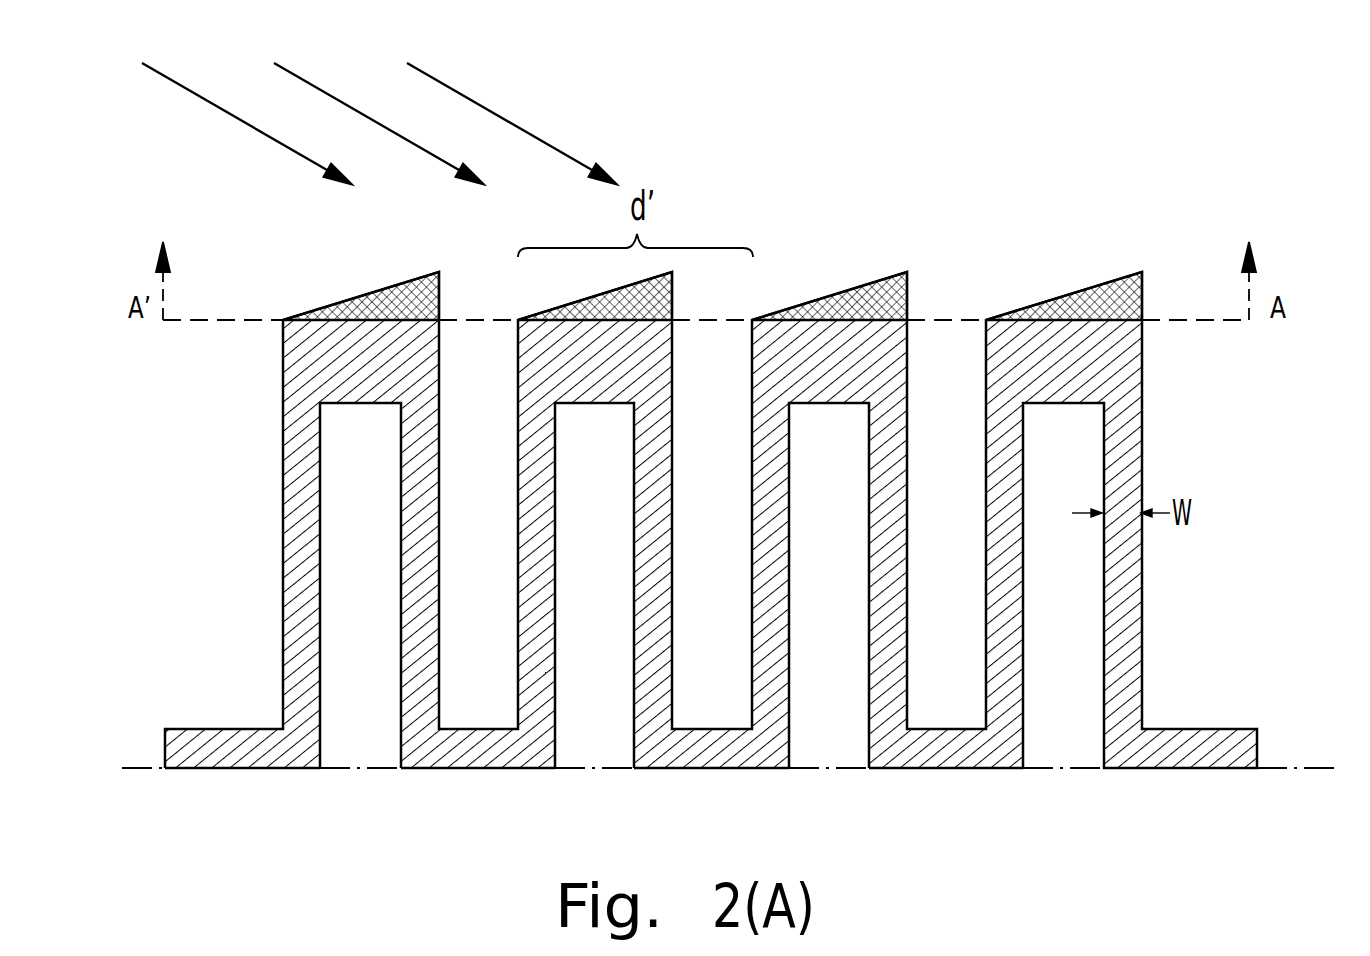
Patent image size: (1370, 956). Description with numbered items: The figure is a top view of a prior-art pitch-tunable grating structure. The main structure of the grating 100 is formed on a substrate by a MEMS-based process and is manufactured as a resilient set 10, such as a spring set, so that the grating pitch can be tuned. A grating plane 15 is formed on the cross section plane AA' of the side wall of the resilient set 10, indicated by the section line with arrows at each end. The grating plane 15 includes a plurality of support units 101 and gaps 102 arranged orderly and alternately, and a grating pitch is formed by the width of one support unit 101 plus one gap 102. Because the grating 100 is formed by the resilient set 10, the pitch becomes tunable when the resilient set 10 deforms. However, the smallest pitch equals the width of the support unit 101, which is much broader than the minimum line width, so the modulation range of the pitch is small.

The grating 100 is at (731, 550).
The resilient set 10 is at (1200, 747).
The grating plane 15 is at (237, 320).
The support unit 101 is at (1142, 258).
The gap 102 is at (987, 258).